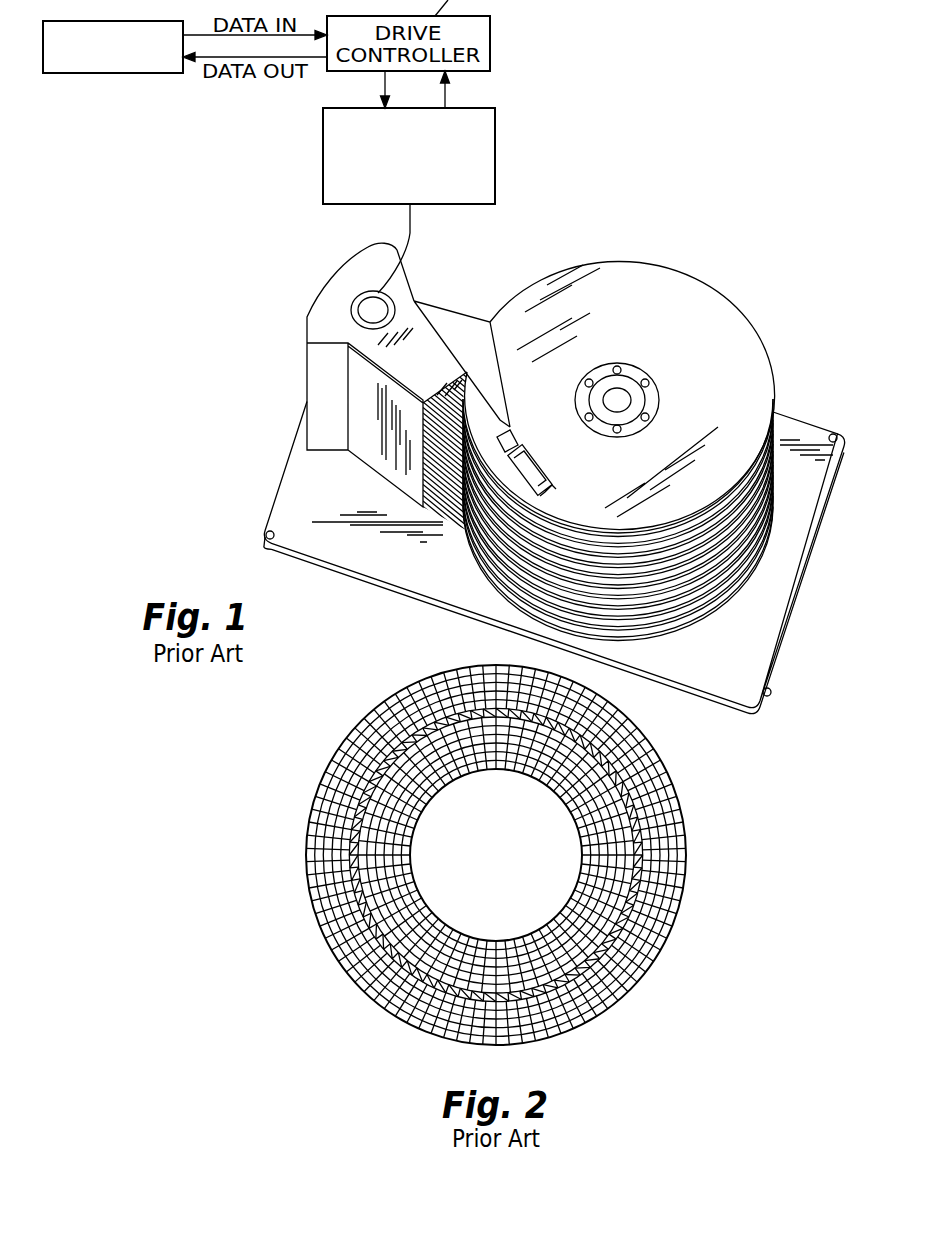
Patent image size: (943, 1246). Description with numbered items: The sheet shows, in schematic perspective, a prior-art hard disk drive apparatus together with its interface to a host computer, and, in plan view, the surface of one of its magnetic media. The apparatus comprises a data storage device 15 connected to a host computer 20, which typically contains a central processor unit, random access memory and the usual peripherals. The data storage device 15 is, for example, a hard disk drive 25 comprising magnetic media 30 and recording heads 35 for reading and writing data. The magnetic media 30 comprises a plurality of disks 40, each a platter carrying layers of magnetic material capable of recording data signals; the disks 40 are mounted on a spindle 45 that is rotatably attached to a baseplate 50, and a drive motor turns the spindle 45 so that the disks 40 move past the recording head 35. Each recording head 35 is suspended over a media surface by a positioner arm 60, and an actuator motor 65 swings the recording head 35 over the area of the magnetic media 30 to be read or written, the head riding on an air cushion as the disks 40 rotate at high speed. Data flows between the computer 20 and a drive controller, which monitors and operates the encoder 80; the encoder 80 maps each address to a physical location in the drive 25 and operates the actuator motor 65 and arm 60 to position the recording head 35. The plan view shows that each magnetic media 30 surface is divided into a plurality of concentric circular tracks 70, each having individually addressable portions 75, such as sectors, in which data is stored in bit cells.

In FIG. 1, the data storage device 15 is at (706, 249).
In FIG. 1, the host computer 20 is at (110, 73).
In FIG. 1, the hard disk drive 25 is at (517, 288).
In FIG. 1, the magnetic media 30 is at (676, 312).
In FIG. 2, the magnetic media 30 is at (295, 866).
In FIG. 1, the recording head 35 is at (549, 478).
In FIG. 1, the disk 40 is at (780, 427).
In FIG. 2, the disk 40 is at (284, 788).
In FIG. 1, the spindle 45 is at (627, 388).
In FIG. 1, the baseplate 50 is at (810, 600).
In FIG. 1, the positioner arm 60 is at (490, 397).
In FIG. 1, the actuator motor 65 is at (320, 381).
In FIG. 2, the concentric circular track 70 is at (688, 902).
In FIG. 2, the addressable portion 75 is at (677, 822).
In FIG. 1, the encoder 80 is at (323, 133).